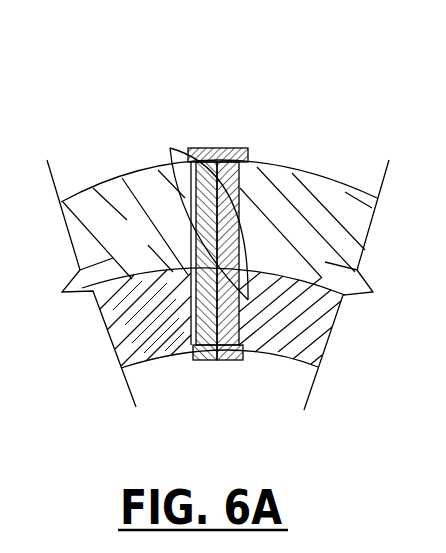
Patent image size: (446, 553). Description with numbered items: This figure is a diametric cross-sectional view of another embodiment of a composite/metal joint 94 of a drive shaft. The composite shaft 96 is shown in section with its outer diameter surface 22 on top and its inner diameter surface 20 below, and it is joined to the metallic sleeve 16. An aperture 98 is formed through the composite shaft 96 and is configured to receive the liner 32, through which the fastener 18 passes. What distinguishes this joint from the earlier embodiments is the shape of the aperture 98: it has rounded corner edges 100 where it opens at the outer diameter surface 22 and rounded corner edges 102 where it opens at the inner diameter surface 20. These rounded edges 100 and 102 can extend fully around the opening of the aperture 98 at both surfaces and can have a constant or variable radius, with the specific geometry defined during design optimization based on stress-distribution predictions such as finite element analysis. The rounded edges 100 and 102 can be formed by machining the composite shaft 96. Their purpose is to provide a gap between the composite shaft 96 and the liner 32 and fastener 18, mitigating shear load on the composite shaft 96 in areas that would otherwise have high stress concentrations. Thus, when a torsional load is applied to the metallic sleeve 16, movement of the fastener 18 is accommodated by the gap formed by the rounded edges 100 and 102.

The composite/metal joint 94 is at (124, 74).
The metallic sleeve 16 is at (147, 240).
The outer diameter surface 22 is at (118, 264).
The composite shaft 96 is at (157, 327).
The inner diameter surface 20 is at (150, 380).
The fastener 18 is at (280, 262).
The liner 32 is at (238, 184).
The aperture 98 is at (219, 281).
The rounded edges 100 is at (195, 213).
The rounded edges 102 is at (238, 357).